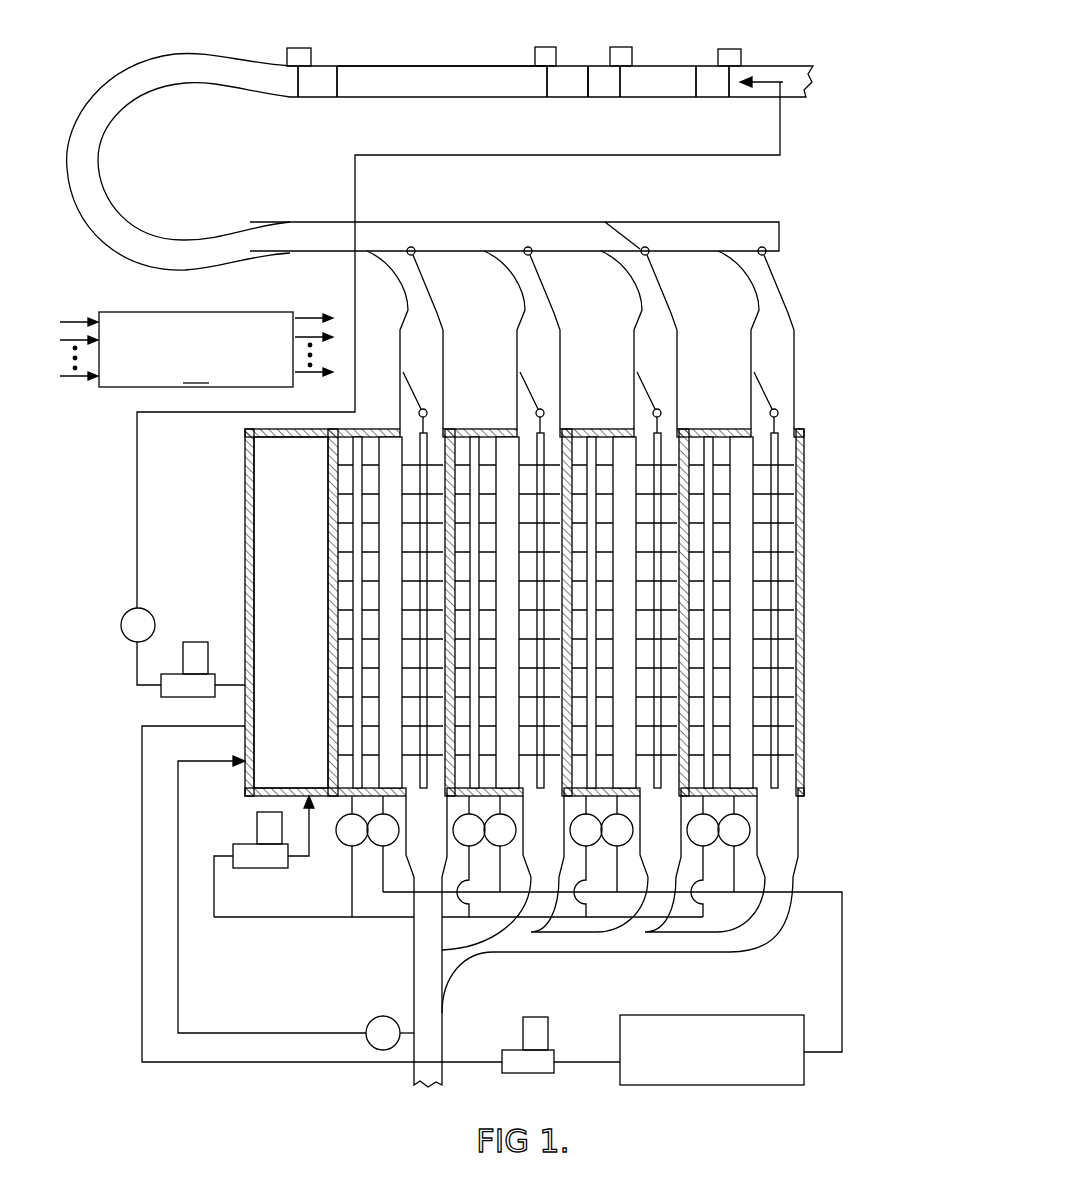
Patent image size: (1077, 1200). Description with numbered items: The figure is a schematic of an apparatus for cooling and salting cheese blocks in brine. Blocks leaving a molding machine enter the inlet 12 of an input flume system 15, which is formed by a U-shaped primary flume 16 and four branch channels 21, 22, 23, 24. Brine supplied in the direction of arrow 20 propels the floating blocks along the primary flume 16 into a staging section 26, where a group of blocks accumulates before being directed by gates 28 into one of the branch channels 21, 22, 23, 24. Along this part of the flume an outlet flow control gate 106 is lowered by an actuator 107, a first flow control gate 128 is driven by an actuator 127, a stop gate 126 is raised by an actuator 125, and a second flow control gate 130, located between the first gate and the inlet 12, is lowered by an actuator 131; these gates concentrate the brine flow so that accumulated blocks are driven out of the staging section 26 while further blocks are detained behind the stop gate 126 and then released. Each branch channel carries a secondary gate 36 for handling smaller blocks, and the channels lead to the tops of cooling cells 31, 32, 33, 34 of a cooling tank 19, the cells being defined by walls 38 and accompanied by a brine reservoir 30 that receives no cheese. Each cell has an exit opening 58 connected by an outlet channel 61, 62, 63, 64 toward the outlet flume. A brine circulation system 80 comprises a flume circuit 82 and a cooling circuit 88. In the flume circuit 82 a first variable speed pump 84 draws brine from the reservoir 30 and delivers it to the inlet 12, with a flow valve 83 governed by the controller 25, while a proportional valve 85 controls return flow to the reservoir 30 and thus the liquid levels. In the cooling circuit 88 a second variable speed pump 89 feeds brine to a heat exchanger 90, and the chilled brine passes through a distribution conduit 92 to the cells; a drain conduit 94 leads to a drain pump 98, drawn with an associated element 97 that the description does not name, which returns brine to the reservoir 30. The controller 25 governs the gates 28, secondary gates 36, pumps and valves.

The inlet 12 is at (807, 66).
The input flume system 15 is at (276, 55).
The primary flume 16 is at (270, 97).
The cooling tank 19 is at (235, 479).
The arrow 20 is at (770, 85).
The branch channel 21 is at (420, 263).
The branch channel 22 is at (537, 263).
The branch channel 23 is at (655, 265).
The branch channel 24 is at (770, 262).
The controller 25 is at (196, 349).
The staging section 26 is at (464, 62).
The gates 28 is at (392, 250).
The brine reservoir 30 is at (306, 599).
The cooling cell 31 is at (388, 456).
The cooling cell 32 is at (493, 456).
The cooling cell 33 is at (610, 456).
The cooling cell 34 is at (728, 458).
The secondary gate 36 is at (412, 381).
The walls 38 is at (328, 522).
The exit opening 58 is at (775, 790).
The outlet channel 61 is at (414, 844).
The outlet channel 62 is at (531, 844).
The outlet channel 63 is at (648, 844).
The outlet channel 64 is at (765, 844).
The brine circulation system 80 is at (215, 1077).
The flume circuit 82 is at (198, 575).
The flow valve 83 is at (150, 610).
The first variable speed pump 84 is at (192, 642).
The proportional valve 85 is at (366, 1040).
The cooling circuit 88 is at (578, 1010).
The second variable speed pump 89 is at (520, 1038).
The heat exchanger 90 is at (762, 1015).
The distribution conduit 92 is at (842, 985).
The drain conduit 94 is at (340, 918).
The pump 97 is at (233, 856).
The drain pump 98 is at (258, 870).
The outlet flow control gate 106 is at (320, 97).
The actuator 107 is at (297, 48).
The actuator 125 is at (626, 47).
The stop gate 126 is at (610, 84).
The actuator 127 is at (536, 47).
The first flow control gate 128 is at (560, 80).
The second flow control gate 130 is at (715, 84).
The actuator 131 is at (731, 49).